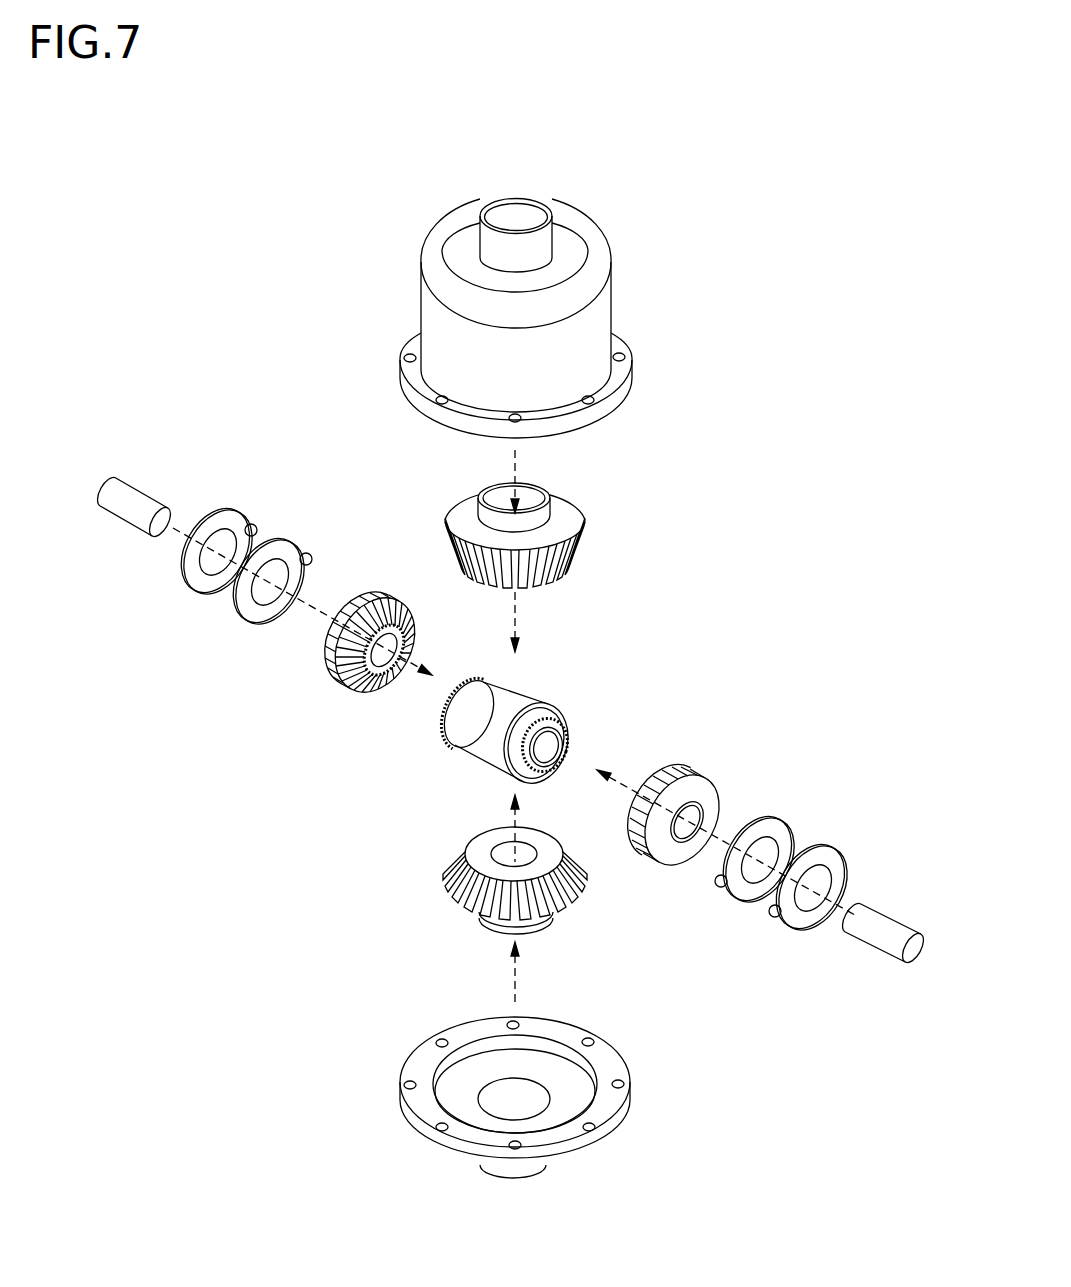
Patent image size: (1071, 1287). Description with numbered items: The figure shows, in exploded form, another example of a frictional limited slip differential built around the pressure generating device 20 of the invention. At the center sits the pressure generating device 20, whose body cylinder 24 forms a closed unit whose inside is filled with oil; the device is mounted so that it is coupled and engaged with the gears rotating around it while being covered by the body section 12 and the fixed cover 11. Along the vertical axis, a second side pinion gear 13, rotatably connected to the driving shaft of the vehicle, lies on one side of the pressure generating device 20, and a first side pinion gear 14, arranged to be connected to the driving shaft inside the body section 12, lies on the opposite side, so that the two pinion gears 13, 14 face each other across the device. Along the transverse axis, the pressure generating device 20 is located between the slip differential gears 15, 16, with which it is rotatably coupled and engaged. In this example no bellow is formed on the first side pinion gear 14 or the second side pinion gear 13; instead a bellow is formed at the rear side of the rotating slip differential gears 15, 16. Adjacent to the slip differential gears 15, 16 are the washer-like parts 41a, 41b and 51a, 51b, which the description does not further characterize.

The fixed cover 11 is at (578, 243).
The body section 12 is at (610, 1070).
The second side pinion gear 13 is at (573, 525).
The first side pinion gear 14 is at (573, 887).
The slip differential gear 15 is at (392, 595).
The slip differential gear 16 is at (707, 797).
The pressure generating device 20 is at (584, 707).
The body cylinder 24 is at (525, 700).
The first washer 41a is at (235, 517).
The second washer 41b is at (292, 543).
The third washer 51a is at (780, 837).
The fourth washer 51b is at (835, 867).